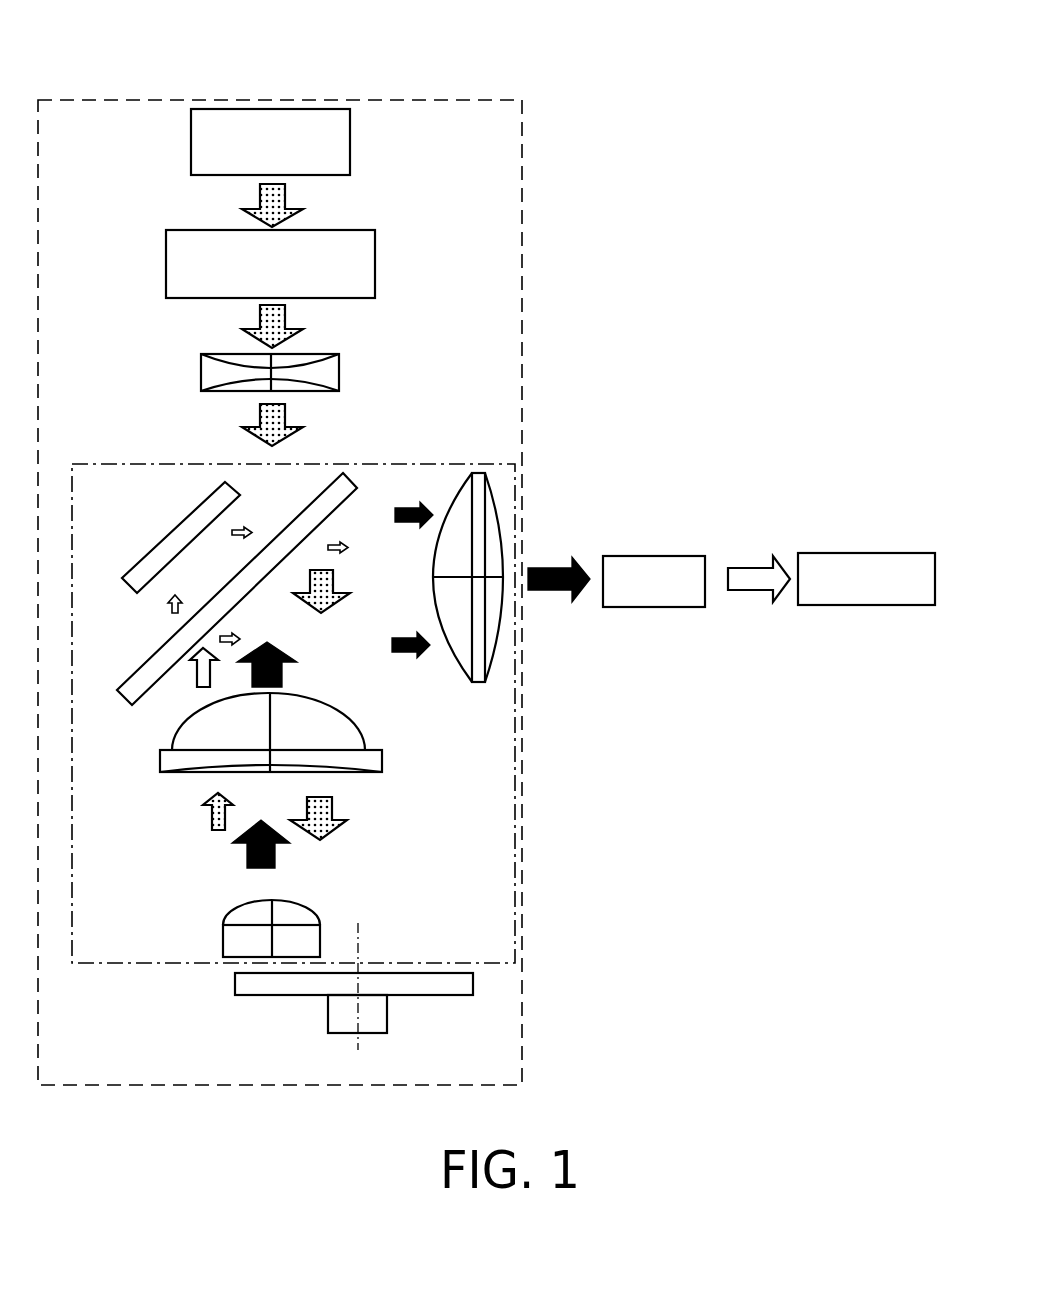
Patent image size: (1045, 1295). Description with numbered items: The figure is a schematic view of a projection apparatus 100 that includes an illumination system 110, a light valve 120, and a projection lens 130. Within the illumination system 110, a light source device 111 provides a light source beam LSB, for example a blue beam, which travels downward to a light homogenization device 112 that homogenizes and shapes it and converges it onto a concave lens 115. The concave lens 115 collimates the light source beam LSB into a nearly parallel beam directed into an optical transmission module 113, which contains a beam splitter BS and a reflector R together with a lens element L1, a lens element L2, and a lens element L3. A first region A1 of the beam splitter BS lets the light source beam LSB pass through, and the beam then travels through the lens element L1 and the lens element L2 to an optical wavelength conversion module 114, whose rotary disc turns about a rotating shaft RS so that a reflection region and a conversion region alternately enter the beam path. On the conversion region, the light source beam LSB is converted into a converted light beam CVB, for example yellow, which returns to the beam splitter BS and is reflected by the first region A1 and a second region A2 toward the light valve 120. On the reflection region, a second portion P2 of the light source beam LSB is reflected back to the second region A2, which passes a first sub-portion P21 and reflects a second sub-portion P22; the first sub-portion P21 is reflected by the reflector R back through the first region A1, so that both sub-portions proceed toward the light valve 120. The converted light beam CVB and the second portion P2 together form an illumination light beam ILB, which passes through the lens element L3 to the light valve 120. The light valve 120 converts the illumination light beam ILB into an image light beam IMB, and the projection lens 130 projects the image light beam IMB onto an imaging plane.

The projection apparatus 100 is at (860, 1102).
The illumination system 110 is at (444, 96).
The light source device 111 is at (191, 137).
The light homogenization device 112 is at (166, 258).
The optical transmission module 113 is at (107, 963).
The optical wavelength conversion module 114 is at (235, 984).
The concave lens 115 is at (201, 370).
The light valve 120 is at (644, 556).
The projection lens 130 is at (875, 553).
The light source beam LSB is at (373, 806).
The converted light beam CVB is at (420, 494).
The illumination light beam ILB is at (548, 565).
The image light beam IMB is at (748, 565).
The beam splitter BS is at (167, 652).
The reflector R is at (168, 536).
The lens element L1 is at (365, 742).
The lens element L2 is at (223, 938).
The lens element L3 is at (465, 680).
The rotating shaft RS is at (358, 1008).
The first region A1 is at (348, 484).
The second region A2 is at (130, 685).
The first sub-portion P21 is at (243, 527).
The second sub-portion P22 is at (231, 646).
The second portion P2 is at (195, 672).